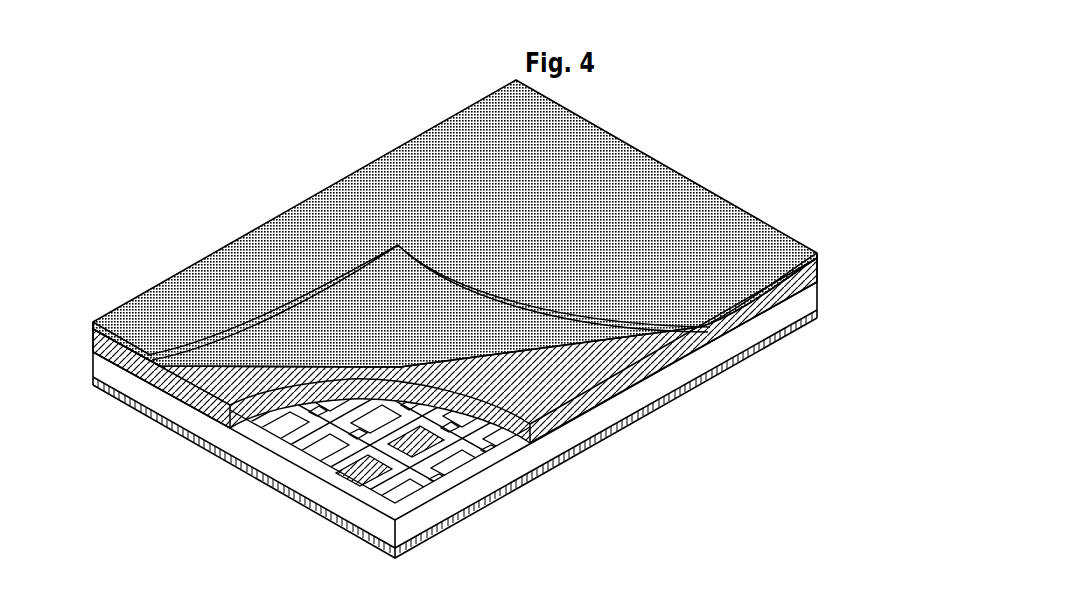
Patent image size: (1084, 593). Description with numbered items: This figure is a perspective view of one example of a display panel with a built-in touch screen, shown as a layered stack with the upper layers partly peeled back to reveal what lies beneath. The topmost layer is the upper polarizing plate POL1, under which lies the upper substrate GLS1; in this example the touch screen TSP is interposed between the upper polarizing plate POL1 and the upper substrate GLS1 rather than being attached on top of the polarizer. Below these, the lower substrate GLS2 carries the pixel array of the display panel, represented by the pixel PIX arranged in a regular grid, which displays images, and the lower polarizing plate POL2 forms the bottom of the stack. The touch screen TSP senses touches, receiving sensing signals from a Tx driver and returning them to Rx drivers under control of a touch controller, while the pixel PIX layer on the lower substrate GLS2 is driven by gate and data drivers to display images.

The upper polarizing plate POL1 is at (820, 256).
The upper substrate GLS1 is at (819, 271).
The lower substrate GLS2 is at (808, 297).
The lower polarizing plate POL2 is at (818, 320).
The touch screen TSP is at (352, 482).
The pixel PIX is at (388, 508).